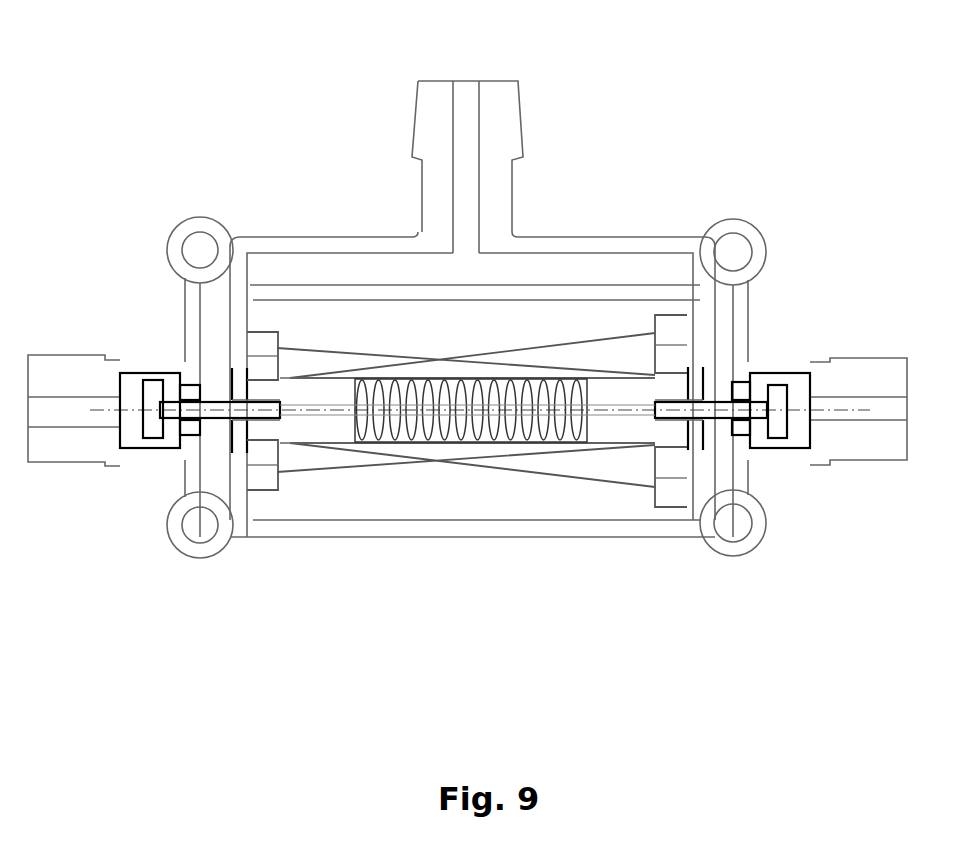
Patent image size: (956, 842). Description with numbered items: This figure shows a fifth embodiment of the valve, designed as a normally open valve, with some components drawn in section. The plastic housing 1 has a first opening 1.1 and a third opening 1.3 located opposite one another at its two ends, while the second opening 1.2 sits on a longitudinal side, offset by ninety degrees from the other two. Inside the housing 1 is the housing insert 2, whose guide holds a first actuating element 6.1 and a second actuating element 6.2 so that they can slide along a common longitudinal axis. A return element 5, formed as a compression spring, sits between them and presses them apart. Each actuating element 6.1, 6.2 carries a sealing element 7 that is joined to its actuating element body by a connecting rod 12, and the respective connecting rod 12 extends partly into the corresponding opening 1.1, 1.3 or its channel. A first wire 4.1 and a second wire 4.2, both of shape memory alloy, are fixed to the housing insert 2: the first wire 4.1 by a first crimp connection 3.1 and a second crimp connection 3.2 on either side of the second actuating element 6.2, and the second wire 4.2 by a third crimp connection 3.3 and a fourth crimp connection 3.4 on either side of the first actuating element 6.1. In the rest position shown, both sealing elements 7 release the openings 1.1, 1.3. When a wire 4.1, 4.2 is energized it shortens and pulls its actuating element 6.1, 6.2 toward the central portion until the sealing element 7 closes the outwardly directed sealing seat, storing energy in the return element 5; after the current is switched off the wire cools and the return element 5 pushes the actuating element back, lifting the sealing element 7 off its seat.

The housing 1 is at (402, 245).
The first opening 1.1 is at (187, 393).
The second opening 1.2 is at (465, 163).
The third opening 1.3 is at (737, 397).
The housing insert 2 is at (412, 443).
The first crimp connection 3.1 is at (673, 333).
The second crimp connection 3.2 is at (672, 490).
The third crimp connection 3.3 is at (263, 350).
The fourth crimp connection 3.4 is at (260, 475).
The first wire 4.1 is at (330, 450).
The second wire 4.2 is at (527, 365).
The return element 5 is at (557, 397).
The first actuating element 6.1 is at (312, 423).
The second actuating element 6.2 is at (620, 423).
The sealing element 7 is at (152, 398).
The connecting rod 12 is at (213, 415).